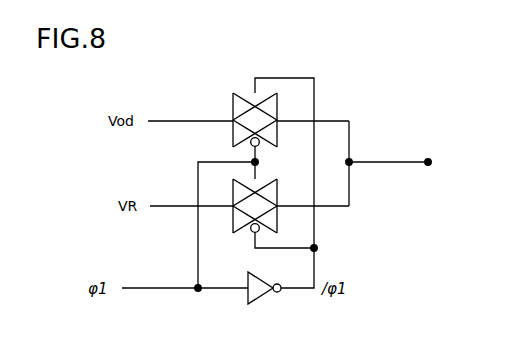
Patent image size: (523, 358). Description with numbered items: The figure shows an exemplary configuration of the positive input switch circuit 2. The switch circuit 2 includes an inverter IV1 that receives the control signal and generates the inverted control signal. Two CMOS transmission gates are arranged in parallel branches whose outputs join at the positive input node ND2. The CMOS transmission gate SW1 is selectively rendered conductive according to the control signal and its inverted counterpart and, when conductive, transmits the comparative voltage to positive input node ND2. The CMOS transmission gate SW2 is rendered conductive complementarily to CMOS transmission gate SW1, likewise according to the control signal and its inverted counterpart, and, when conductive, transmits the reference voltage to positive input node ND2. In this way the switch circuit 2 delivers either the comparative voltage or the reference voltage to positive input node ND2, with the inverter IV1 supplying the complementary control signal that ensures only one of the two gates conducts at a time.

The CMOS transmission gate SW1 is at (233, 112).
The CMOS transmission gate SW2 is at (236, 218).
The inverter IV1 is at (262, 298).
The positive input node ND2 is at (429, 158).
The switch circuit 2 is at (327, 339).